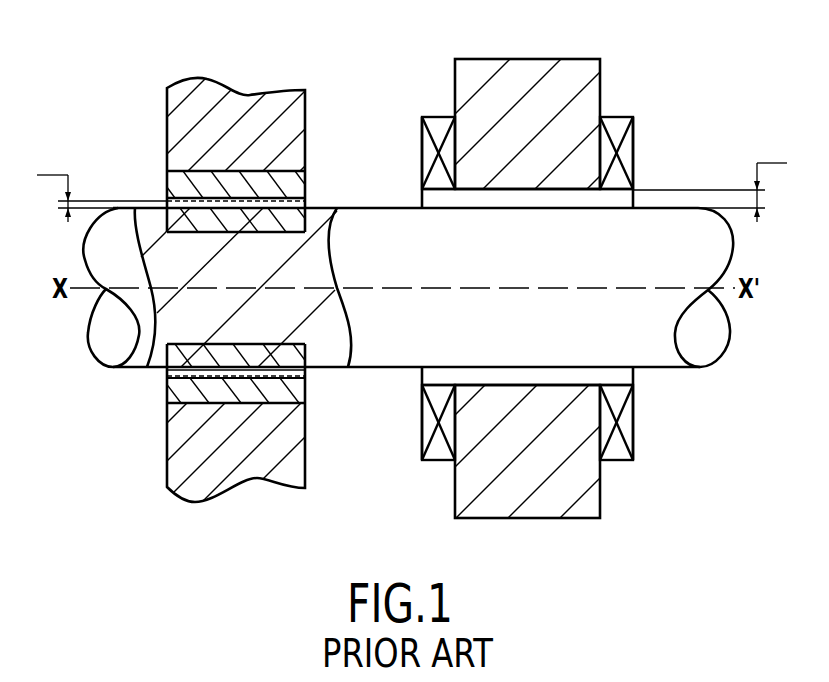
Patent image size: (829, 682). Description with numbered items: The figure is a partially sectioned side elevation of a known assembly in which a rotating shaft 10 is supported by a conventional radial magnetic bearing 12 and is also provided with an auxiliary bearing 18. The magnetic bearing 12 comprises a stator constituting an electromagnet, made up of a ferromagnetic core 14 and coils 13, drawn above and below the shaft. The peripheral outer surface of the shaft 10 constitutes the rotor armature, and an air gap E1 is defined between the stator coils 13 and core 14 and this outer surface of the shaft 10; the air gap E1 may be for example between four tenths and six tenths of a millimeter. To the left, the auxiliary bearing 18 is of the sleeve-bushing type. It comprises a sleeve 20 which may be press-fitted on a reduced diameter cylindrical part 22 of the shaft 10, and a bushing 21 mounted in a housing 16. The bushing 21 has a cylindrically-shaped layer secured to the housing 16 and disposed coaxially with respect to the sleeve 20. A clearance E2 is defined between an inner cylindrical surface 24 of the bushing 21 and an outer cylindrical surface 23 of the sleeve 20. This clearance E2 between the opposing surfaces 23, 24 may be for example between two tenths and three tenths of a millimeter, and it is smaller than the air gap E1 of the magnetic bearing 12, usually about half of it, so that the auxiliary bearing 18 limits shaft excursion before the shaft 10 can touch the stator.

The rotating shaft 10 is at (658, 369).
The radial magnetic bearing 12 is at (615, 67).
The coils 13 is at (437, 117).
The ferromagnetic core 14 is at (525, 70).
The housing 16 is at (244, 98).
The auxiliary bearing 18 is at (312, 390).
The sleeve 20 is at (319, 238).
The bushing 21 is at (290, 189).
The reduced diameter cylindrical part 22 is at (175, 323).
The outer cylindrical surface 23 is at (182, 380).
The inner cylindrical surface 24 is at (194, 217).
The air gap E1 is at (710, 178).
The clearance E2 is at (102, 184).